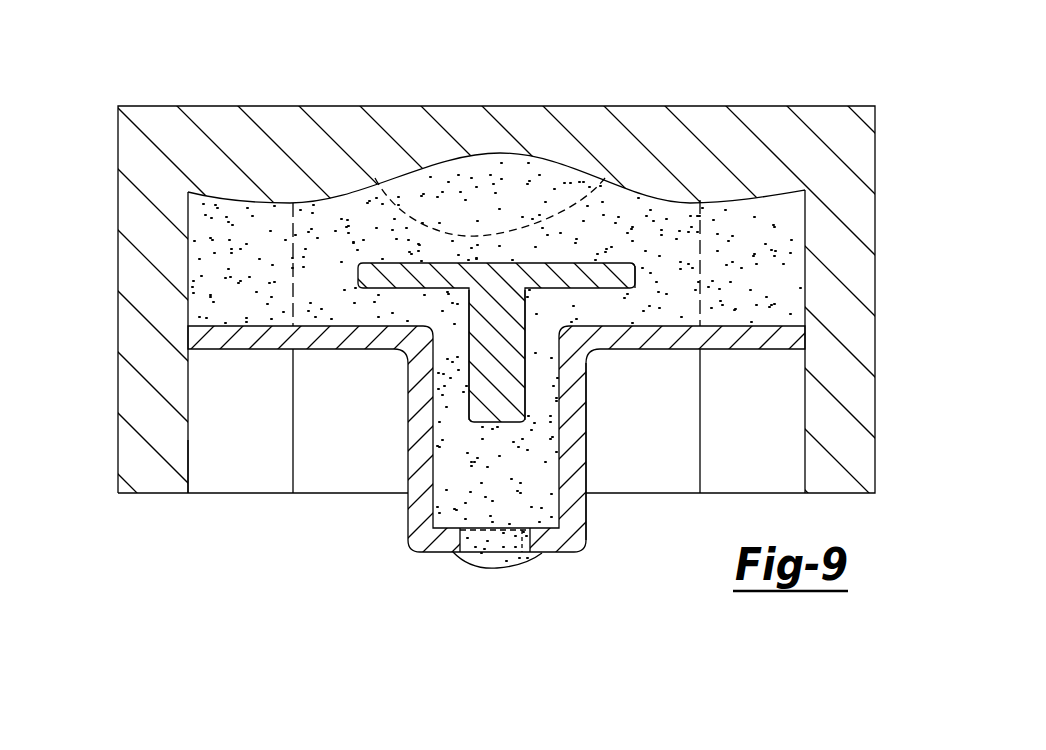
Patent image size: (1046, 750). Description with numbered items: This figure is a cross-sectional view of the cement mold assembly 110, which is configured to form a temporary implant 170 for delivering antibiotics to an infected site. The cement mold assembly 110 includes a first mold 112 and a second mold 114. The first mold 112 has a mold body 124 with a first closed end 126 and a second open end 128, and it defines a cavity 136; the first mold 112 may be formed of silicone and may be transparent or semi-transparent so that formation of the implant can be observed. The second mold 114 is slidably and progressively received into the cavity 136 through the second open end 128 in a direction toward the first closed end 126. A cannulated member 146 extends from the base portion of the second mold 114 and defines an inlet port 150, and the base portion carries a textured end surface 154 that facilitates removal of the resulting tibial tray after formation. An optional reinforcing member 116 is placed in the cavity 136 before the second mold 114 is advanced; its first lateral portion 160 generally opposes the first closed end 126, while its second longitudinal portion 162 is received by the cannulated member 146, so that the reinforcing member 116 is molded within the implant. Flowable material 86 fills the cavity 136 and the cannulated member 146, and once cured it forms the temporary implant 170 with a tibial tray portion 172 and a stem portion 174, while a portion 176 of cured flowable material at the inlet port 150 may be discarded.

The cement mold assembly 110 is at (752, 68).
The first mold 112 is at (288, 122).
The second mold 114 is at (345, 350).
The reinforcing member 116 is at (515, 385).
The mold body 124 is at (875, 254).
The first closed end 126 is at (262, 203).
The second open end 128 is at (188, 460).
The cavity 136 is at (205, 303).
The cannulated member 146 is at (560, 492).
The inlet port 150 is at (535, 566).
The textured end surface 154 is at (768, 326).
The first lateral portion 160 is at (633, 273).
The second longitudinal portion 162 is at (498, 355).
The temporary implant 170 is at (793, 213).
The tibial tray portion 172 is at (785, 277).
The stem portion 174 is at (512, 463).
The portion of cured flowable material 176 is at (497, 556).
The flowable material 86 is at (475, 560).